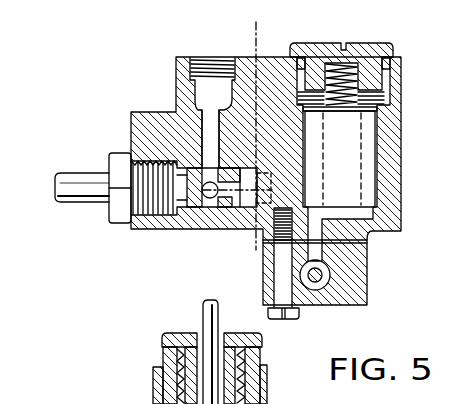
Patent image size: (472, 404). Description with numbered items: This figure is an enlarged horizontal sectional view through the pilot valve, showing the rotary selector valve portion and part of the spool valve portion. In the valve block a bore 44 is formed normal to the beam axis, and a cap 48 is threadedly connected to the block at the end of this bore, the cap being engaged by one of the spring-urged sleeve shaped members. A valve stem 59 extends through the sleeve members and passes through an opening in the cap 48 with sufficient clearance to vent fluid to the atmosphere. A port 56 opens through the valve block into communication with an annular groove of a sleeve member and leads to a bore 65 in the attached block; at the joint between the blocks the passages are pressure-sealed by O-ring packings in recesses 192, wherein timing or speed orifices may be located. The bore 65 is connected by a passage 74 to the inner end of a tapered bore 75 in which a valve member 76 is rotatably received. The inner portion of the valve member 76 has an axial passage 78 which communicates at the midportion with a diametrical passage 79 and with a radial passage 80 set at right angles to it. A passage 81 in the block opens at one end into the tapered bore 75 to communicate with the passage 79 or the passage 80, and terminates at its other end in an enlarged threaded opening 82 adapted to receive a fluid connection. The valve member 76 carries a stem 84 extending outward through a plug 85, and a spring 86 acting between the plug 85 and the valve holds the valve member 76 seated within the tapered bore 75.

The recesses 192 is at (370, 236).
The bore 65 is at (376, 137).
The enlarged threaded opening 82 is at (227, 60).
The passage 81 is at (203, 133).
The spring 86 is at (152, 229).
The plug 85 is at (110, 222).
The stem 84 is at (85, 173).
The diametrical passage 79 is at (210, 205).
The radial passage 80 is at (211, 182).
The axial passage 78 is at (230, 194).
The tapered bore 75 is at (248, 203).
The valve member 76 is at (185, 207).
The passage 74 is at (289, 189).
The port 56 is at (317, 254).
The bore 44 is at (316, 288).
The cap 48 is at (163, 350).
The valve stem 59 is at (203, 319).